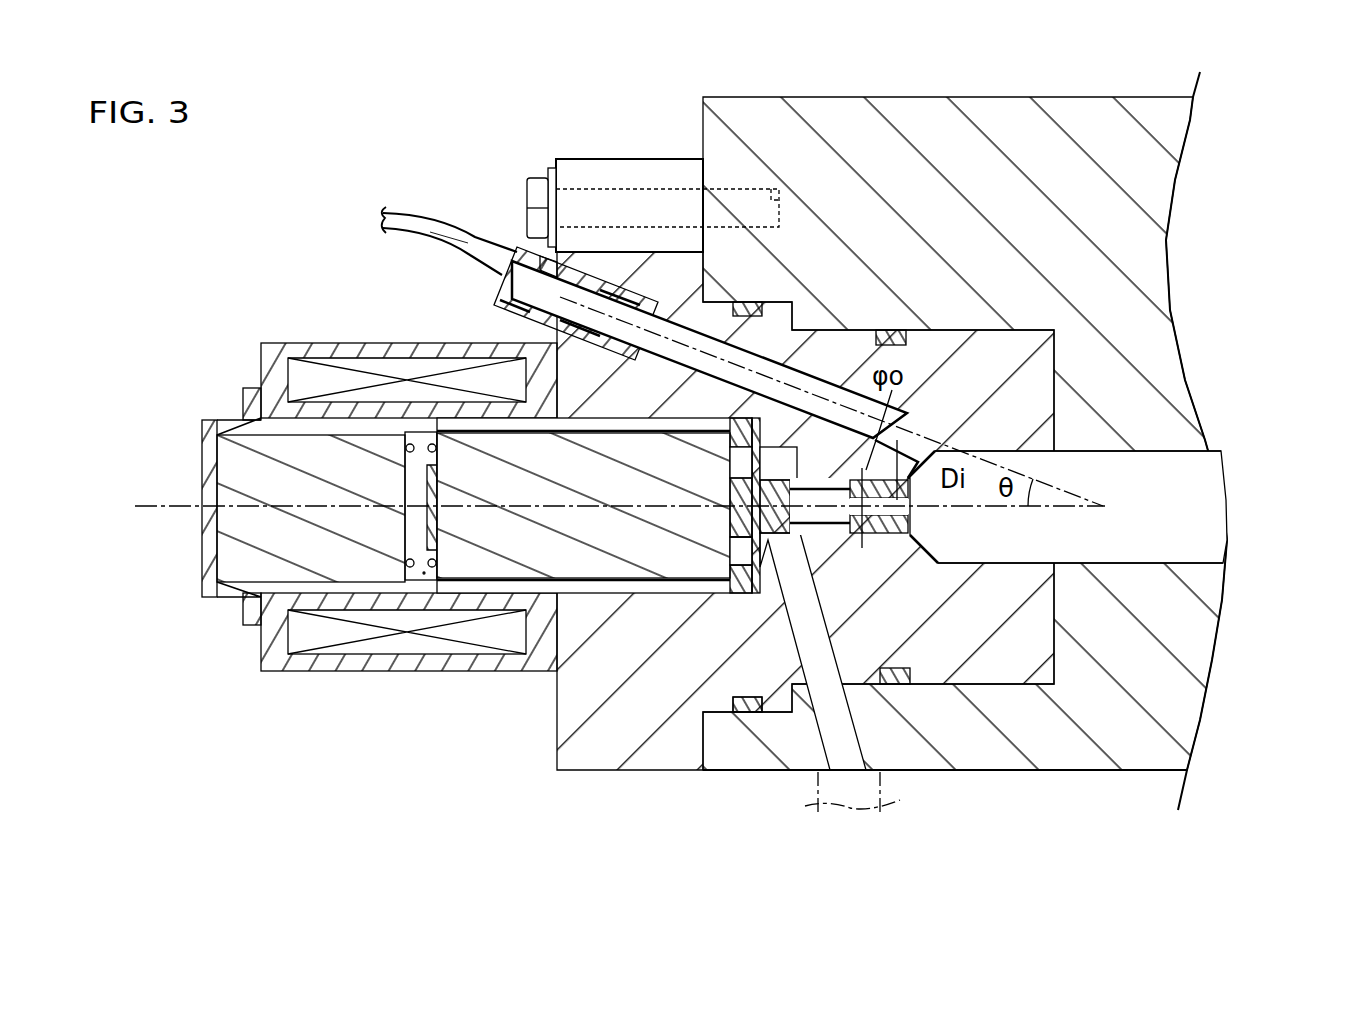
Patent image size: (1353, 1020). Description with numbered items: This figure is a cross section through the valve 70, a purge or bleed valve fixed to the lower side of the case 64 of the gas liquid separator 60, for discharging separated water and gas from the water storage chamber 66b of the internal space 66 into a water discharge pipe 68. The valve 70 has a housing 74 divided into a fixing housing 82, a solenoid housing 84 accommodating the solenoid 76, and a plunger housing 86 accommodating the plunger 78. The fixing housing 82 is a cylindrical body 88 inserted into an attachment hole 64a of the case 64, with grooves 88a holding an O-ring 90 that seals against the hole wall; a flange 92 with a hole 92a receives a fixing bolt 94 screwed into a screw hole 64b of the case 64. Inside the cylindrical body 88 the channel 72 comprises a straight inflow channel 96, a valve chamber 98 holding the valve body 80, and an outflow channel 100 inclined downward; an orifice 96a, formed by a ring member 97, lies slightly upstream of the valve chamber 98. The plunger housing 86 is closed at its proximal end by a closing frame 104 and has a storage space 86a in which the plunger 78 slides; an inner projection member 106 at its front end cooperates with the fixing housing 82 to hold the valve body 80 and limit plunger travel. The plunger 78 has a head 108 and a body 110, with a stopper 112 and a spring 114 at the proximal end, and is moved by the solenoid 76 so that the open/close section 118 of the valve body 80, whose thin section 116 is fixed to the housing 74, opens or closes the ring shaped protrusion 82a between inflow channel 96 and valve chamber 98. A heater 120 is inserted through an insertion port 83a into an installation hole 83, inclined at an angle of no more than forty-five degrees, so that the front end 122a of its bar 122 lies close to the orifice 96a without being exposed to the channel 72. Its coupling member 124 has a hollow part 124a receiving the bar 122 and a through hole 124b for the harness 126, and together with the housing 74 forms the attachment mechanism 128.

The gas liquid separator 60 is at (929, 425).
The case 64 is at (923, 96).
The attachment hole 64a is at (720, 712).
The screw hole 64b is at (781, 196).
The internal space 66 is at (1125, 507).
The water storage chamber 66b is at (1195, 516).
The water discharge pipe 68 is at (892, 802).
The valve 70 is at (437, 508).
The channel 72 is at (993, 504).
The housing 74 is at (603, 518).
The solenoid 76 is at (356, 360).
The plunger 78 is at (465, 447).
The valve body 80 is at (743, 534).
The fixing housing 82 is at (548, 746).
The ring shaped protrusion 82a is at (792, 480).
The installation hole 83 is at (738, 303).
The insertion port 83a is at (520, 246).
The solenoid housing 84 is at (300, 688).
The plunger housing 86 is at (287, 600).
The storage space 86a is at (424, 575).
The cylindrical body 88 is at (1032, 688).
The groove 88a is at (903, 687).
The O-ring 90 is at (747, 712).
The flange 92 is at (620, 158).
The hole 92a is at (594, 194).
The fixing bolt 94 is at (540, 176).
The inflow channel 96 is at (1025, 562).
The orifice 96a is at (902, 496).
The ring member 97 is at (893, 528).
The valve chamber 98 is at (786, 430).
The outflow channel 100 is at (822, 657).
The closing frame 104 is at (204, 545).
The inner projection member 106 is at (731, 588).
The head 108 is at (742, 490).
The body 110 is at (618, 455).
The stopper 112 is at (432, 520).
The spring 114 is at (432, 450).
The thin section 116 is at (733, 545).
The open/close section 118 is at (788, 516).
The heater 120 is at (425, 214).
The bar 122 is at (770, 350).
The front end 122a is at (920, 424).
The coupling member 124 is at (590, 322).
The hollow part 124a is at (646, 302).
The through hole 124b is at (498, 287).
The harness 126 is at (415, 236).
The attachment mechanism 128 is at (612, 278).